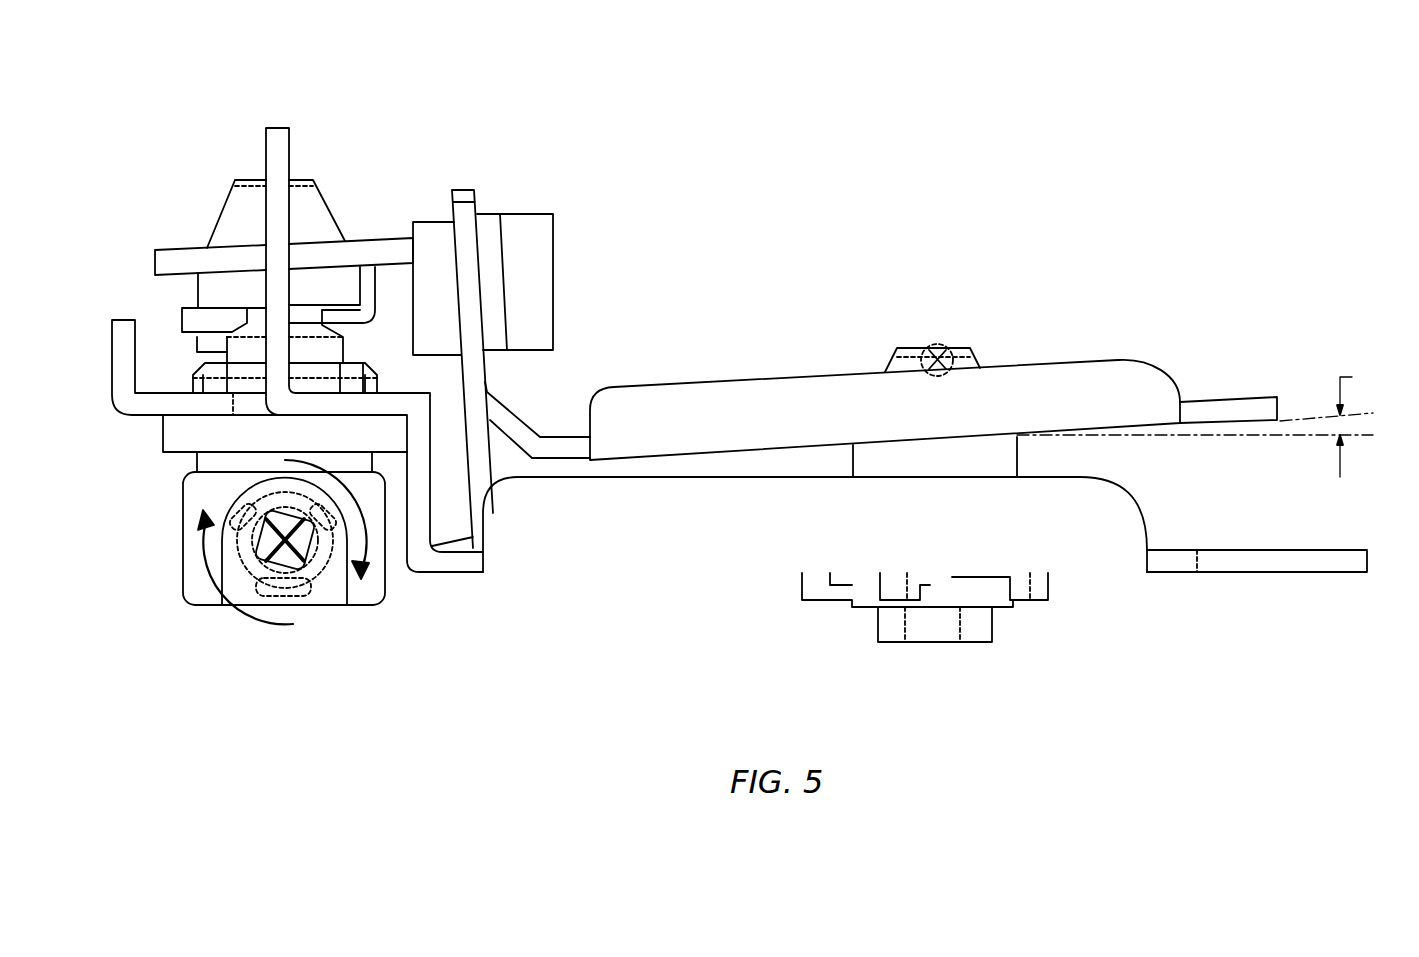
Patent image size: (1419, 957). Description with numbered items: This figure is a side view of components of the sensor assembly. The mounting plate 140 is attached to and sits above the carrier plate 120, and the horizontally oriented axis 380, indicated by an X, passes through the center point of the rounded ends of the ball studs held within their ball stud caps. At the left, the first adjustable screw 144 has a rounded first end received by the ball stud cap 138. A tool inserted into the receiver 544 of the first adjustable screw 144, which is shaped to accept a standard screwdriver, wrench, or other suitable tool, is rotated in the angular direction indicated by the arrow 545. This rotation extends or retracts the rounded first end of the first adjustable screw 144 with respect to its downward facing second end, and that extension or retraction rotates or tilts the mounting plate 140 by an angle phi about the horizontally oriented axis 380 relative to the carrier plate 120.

The ball stud cap 138 is at (247, 180).
The first adjustable screw 144 is at (183, 508).
The receiver 544 is at (303, 560).
The arrow 545 is at (253, 620).
The mounting plate 140 is at (834, 415).
The carrier plate 120 is at (836, 529).
The horizontally oriented axis 380 is at (940, 360).